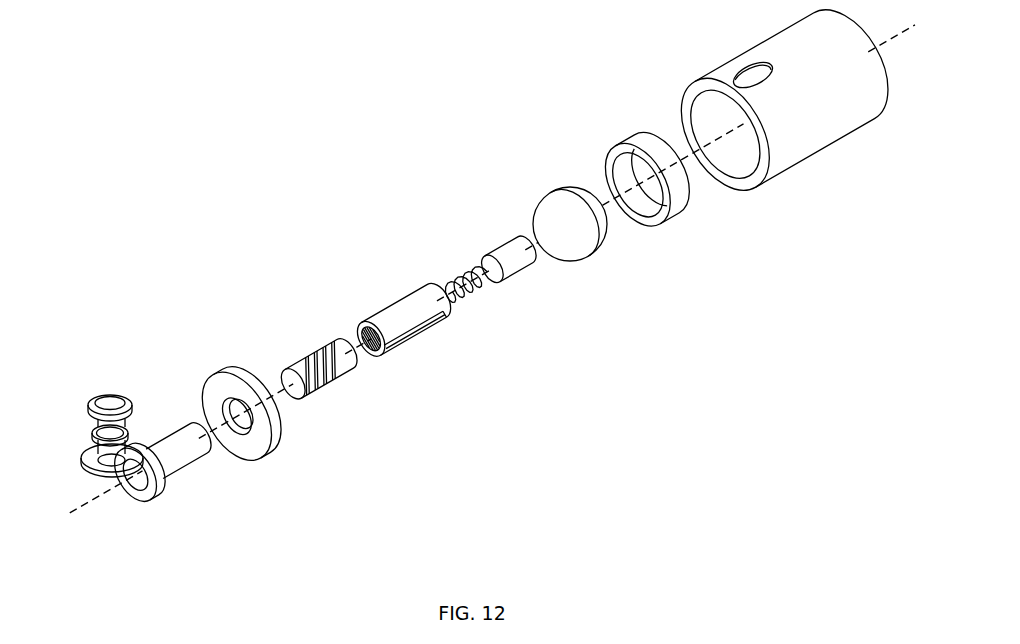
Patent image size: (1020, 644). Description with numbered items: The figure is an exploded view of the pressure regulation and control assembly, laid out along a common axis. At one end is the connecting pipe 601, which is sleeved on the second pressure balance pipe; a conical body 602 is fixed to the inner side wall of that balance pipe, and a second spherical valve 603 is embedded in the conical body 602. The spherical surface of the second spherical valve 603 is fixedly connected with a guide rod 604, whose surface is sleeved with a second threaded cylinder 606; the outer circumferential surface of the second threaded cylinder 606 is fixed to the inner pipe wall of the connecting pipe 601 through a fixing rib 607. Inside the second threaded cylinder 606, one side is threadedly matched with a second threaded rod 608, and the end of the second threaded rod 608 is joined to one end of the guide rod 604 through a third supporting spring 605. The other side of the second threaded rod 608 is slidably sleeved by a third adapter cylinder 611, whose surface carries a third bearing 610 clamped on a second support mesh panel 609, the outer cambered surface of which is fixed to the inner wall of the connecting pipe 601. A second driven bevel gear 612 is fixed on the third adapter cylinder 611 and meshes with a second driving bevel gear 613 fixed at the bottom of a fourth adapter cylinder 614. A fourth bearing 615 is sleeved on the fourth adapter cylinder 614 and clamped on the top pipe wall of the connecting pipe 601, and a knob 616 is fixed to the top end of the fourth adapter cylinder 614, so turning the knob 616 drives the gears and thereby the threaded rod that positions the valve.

The connecting pipe 601 is at (790, 132).
The conical body 602 is at (649, 140).
The second spherical valve 603 is at (602, 228).
The guide rod 604 is at (512, 252).
The third supporting spring 605 is at (485, 291).
The second threaded cylinder 606 is at (410, 315).
The fixing rib 607 is at (407, 345).
The second threaded rod 608 is at (327, 360).
The second support mesh panel 609 is at (268, 408).
The third bearing 610 is at (225, 400).
The third adapter cylinder 611 is at (192, 448).
The second driven bevel gear 612 is at (150, 500).
The second driving bevel gear 613 is at (100, 472).
The fourth adapter cylinder 614 is at (110, 402).
The fourth bearing 615 is at (95, 436).
The knob 616 is at (92, 405).